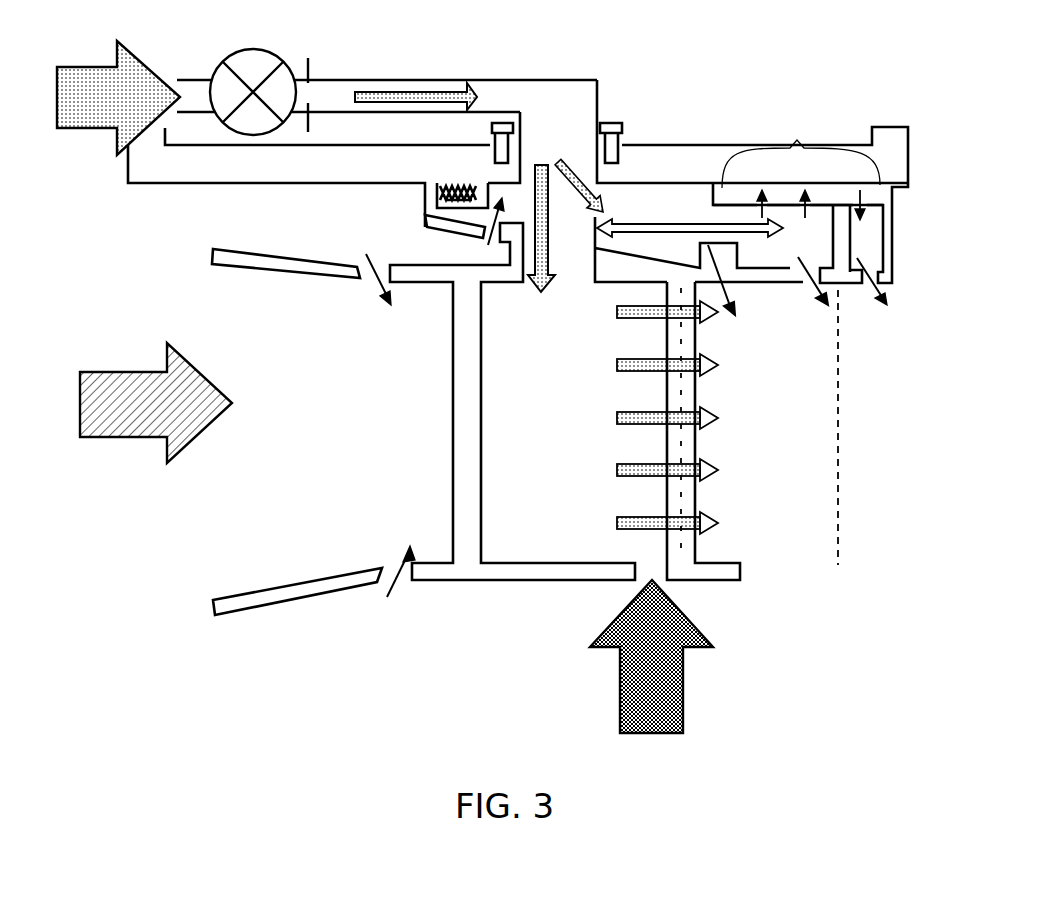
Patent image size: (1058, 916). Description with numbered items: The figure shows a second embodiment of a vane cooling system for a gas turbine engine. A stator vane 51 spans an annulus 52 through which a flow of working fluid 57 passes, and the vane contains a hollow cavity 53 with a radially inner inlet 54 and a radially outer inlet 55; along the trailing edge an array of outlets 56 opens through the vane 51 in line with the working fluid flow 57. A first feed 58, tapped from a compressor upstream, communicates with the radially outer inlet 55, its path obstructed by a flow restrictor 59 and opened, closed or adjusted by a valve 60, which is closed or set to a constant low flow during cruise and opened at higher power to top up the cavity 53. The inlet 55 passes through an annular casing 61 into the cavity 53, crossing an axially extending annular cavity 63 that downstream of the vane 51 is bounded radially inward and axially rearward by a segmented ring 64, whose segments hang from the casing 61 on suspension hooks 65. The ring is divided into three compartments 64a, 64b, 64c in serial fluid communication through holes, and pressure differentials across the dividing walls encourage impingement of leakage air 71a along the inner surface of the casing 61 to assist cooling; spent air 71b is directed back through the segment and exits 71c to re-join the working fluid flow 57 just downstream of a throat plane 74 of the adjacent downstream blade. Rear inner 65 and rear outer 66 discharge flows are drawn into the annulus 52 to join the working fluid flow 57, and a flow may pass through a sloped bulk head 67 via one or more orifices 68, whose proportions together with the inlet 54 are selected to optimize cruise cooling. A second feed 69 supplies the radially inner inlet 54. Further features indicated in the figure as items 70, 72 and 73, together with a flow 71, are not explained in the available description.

The stator vane 51 is at (450, 425).
The annulus 52 is at (342, 373).
The hollow cavity 53 is at (545, 425).
The radially inner inlet 54 is at (645, 572).
The radially outer inlet 55 is at (585, 133).
The array of outlets 56 is at (658, 358).
The flow of working fluid 57 is at (112, 372).
The first feed 58 is at (75, 85).
The flow restrictor 59 is at (313, 70).
The valve 60 is at (248, 63).
The annular casing 61 is at (672, 152).
The axially extending annular cavity 63 is at (665, 218).
The segmented ring 64 is at (888, 277).
The first compartment 64a is at (785, 260).
The second compartment 64b is at (893, 187).
The third compartment 64c is at (870, 246).
The suspension hooks 65 is at (797, 140).
The rear outer discharge flow 66 is at (365, 257).
The sloped bulk head 67 is at (460, 220).
The orifices 68 is at (490, 250).
The second feed 69 is at (670, 683).
The nozzle column 70 is at (693, 560).
The outlet flow 71 is at (733, 297).
The leakage air 71a is at (762, 196).
The spent air 71b is at (858, 196).
The exits 71c is at (880, 300).
The slanted plate 72 is at (710, 246).
The intermediate chamber 73 is at (805, 275).
The throat plane 74 is at (840, 490).